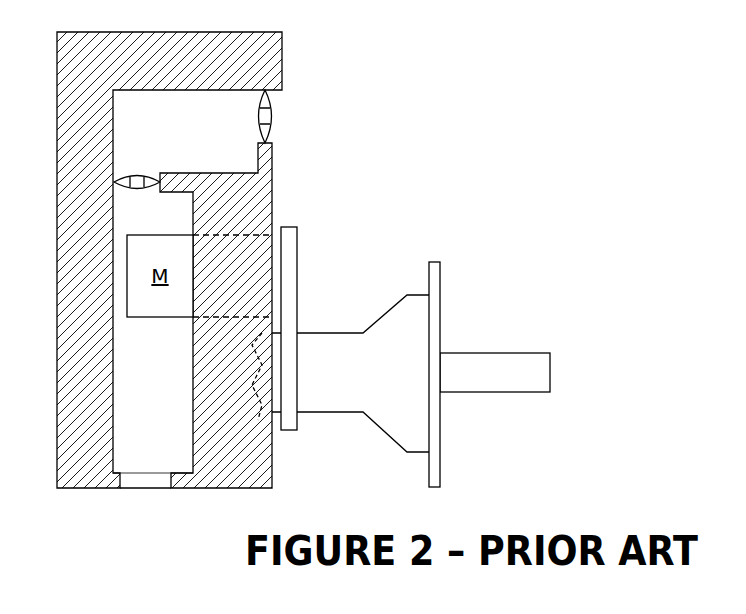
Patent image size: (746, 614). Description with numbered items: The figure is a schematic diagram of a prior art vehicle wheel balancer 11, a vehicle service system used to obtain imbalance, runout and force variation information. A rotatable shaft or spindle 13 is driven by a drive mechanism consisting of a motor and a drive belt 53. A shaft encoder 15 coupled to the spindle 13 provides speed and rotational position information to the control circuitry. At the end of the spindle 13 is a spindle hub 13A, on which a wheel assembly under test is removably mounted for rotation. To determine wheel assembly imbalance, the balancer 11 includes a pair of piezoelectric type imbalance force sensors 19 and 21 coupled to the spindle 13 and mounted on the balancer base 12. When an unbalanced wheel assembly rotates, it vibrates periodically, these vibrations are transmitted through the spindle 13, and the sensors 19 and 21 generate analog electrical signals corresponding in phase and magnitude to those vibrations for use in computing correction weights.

The vehicle wheel balancer 11 is at (290, 61).
The balancer base 12 is at (118, 477).
The spindle 13 is at (495, 352).
The spindle hub 13A is at (440, 471).
The shaft encoder 15 is at (275, 441).
The imbalance force sensor 19 is at (137, 175).
The imbalance force sensor 21 is at (272, 116).
The drive belt 53 is at (297, 253).